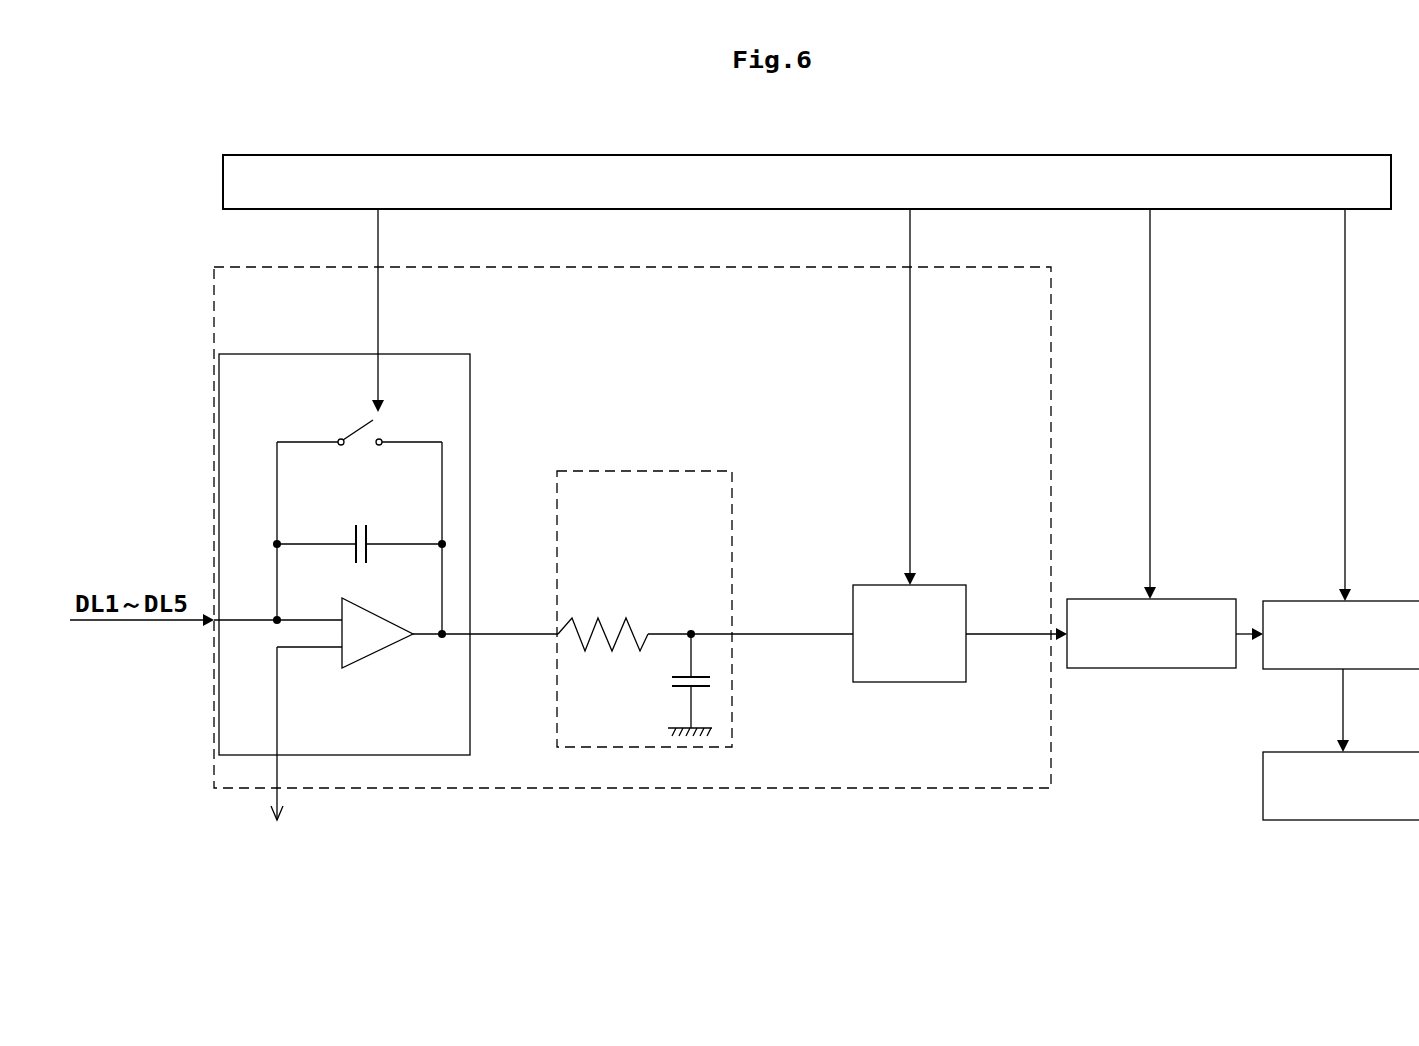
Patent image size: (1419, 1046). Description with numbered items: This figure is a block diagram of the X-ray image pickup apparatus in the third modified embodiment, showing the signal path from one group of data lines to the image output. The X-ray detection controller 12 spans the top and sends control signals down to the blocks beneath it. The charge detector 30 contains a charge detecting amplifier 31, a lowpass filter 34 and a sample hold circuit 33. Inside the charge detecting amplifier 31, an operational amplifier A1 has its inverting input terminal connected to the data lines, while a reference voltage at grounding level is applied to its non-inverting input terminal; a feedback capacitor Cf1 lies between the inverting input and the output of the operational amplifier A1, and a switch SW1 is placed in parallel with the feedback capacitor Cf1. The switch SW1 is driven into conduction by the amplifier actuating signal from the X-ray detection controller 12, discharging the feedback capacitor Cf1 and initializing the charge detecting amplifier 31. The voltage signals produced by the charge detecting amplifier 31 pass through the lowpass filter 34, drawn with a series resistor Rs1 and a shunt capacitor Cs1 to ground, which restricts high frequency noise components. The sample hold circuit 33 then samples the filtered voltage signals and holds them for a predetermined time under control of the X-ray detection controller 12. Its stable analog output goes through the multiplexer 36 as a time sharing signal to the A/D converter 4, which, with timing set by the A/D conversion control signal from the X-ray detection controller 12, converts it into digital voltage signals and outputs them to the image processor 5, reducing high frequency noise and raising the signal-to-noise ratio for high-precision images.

The X-ray detection controller 12 is at (489, 151).
The charge detector 30 is at (243, 265).
The charge detecting amplifier 31 is at (262, 353).
The lowpass filter 34 is at (568, 466).
The sample hold circuit 33 is at (927, 584).
The multiplexer 36 is at (1168, 598).
The A/D converter 4 is at (1357, 600).
The image processor 5 is at (1355, 752).
The switch SW1 is at (391, 432).
The feedback capacitor Cf1 is at (364, 520).
The operational amplifier A1 is at (376, 655).
The resistor Rs1 is at (604, 605).
The capacitor Cs1 is at (668, 682).